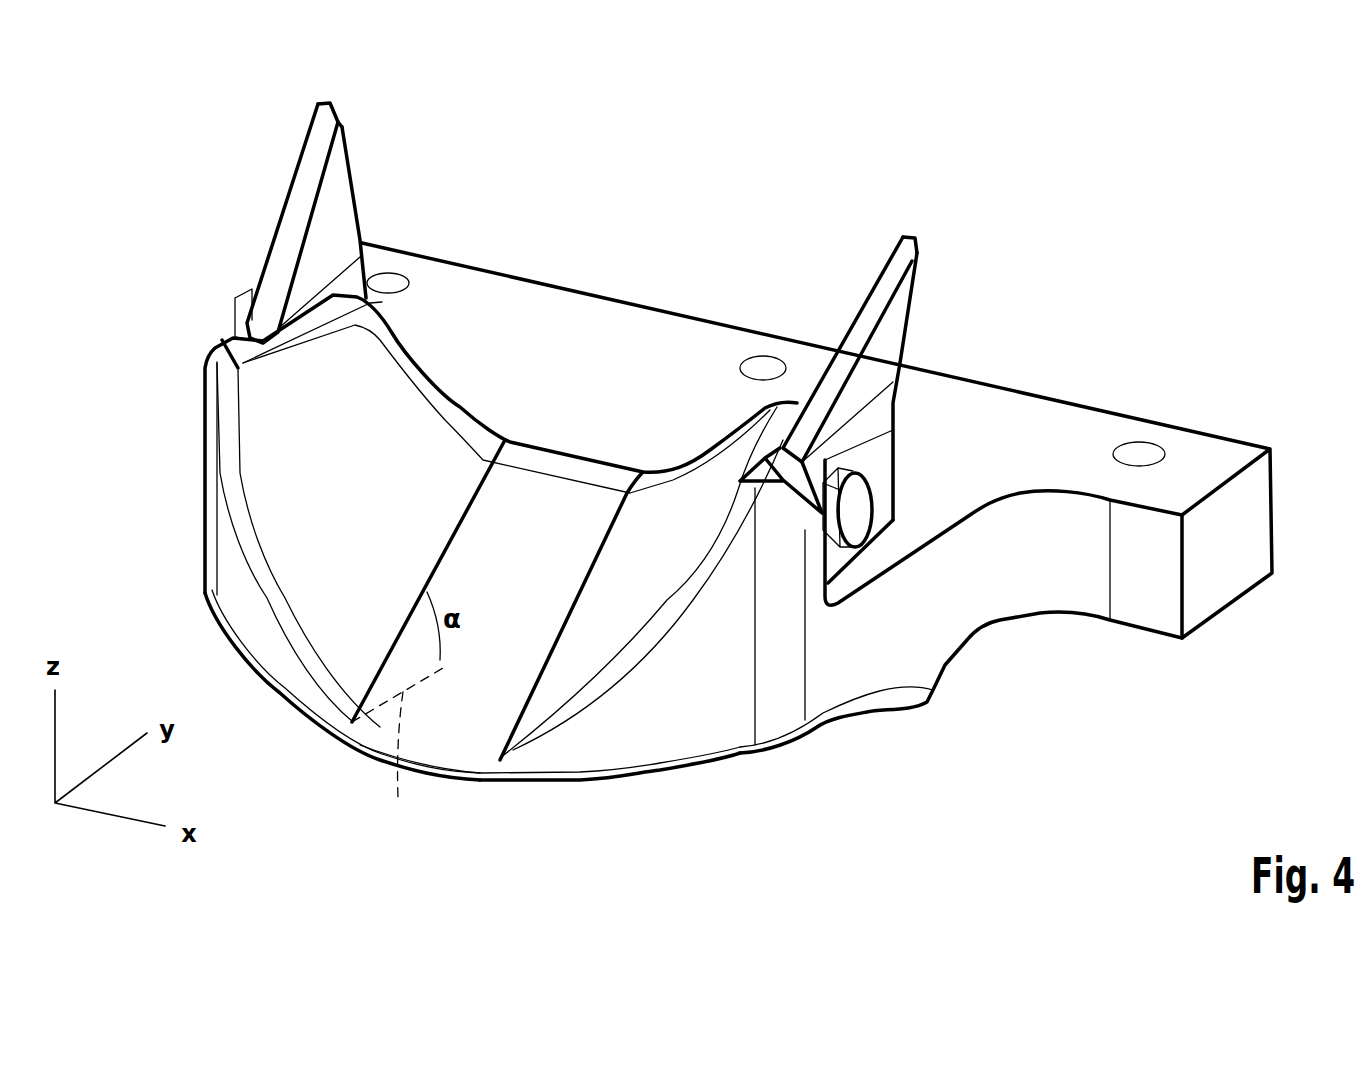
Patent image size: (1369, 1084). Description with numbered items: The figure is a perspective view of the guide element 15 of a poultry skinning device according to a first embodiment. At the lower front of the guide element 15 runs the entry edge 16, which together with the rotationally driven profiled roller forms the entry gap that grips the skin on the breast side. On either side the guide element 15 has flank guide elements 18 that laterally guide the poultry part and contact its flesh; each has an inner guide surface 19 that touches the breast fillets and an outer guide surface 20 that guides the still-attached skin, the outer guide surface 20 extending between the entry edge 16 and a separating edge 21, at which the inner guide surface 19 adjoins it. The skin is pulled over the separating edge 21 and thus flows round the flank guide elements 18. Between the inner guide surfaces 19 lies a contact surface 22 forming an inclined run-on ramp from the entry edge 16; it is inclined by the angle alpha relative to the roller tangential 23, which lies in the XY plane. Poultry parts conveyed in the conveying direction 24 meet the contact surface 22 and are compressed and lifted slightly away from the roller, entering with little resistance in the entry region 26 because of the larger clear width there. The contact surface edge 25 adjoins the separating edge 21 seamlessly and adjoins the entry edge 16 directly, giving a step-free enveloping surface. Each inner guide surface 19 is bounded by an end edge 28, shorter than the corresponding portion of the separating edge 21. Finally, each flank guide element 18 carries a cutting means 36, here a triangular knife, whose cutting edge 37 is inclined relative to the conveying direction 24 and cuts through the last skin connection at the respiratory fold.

The guide element 15 is at (1040, 195).
The entry edge 16 is at (613, 772).
The flank guide elements 18 is at (168, 390).
The inner guide surfaces 19 is at (460, 410).
The outer guide surfaces 20 is at (228, 545).
The separating edge 21 is at (243, 477).
The contact surface 22 is at (567, 497).
The roller tangential 23 is at (397, 750).
The conveying direction 24 is at (1268, 635).
The contact surface edge 25 is at (444, 757).
The entry region 26 is at (368, 777).
The end edges 28 is at (428, 388).
The cutting means 36 is at (340, 207).
The cutting edges 37 is at (315, 170).